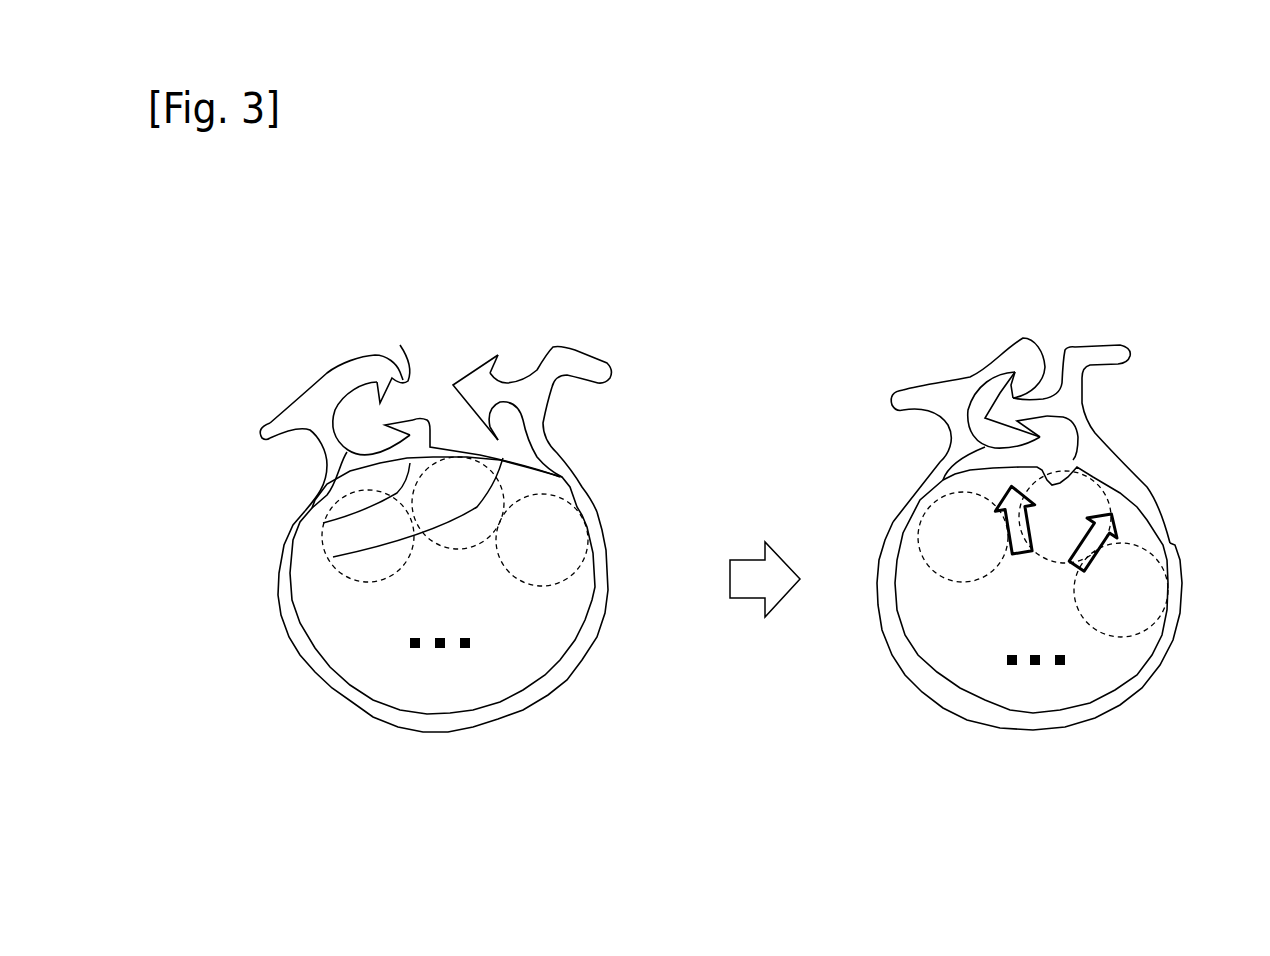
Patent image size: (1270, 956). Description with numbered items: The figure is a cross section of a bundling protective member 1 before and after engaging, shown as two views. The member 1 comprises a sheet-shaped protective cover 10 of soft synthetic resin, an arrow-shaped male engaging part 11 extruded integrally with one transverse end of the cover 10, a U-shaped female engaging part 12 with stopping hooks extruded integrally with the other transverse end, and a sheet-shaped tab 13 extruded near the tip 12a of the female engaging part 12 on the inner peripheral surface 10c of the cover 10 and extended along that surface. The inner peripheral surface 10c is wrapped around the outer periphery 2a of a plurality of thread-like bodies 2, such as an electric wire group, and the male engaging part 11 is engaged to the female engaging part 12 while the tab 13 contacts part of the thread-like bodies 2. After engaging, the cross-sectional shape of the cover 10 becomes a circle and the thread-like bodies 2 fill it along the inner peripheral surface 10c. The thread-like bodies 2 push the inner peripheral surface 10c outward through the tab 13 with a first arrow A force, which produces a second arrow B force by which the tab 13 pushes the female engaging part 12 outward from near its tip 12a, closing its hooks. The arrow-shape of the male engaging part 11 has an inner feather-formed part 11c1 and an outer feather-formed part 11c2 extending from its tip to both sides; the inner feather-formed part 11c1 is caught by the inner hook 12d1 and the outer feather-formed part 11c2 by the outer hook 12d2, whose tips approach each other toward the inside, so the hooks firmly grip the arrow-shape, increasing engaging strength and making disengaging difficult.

The bundling protective member 1 is at (590, 229).
The thread-like bodies 2 is at (397, 580).
The outer periphery 2a is at (587, 560).
The protective cover 10 is at (533, 703).
The inner peripheral surface 10c is at (578, 493).
The male engaging part 11 is at (558, 358).
The inner feather-formed part 11c1 is at (487, 420).
The outer feather-formed part 11c2 is at (500, 348).
The female engaging part 12 is at (335, 390).
The tip 12a is at (323, 523).
The inner hook 12d1 is at (410, 420).
The outer hook 12d2 is at (400, 345).
The tab 13 is at (333, 557).
The first arrow force A is at (1100, 557).
The second arrow force B is at (1007, 528).